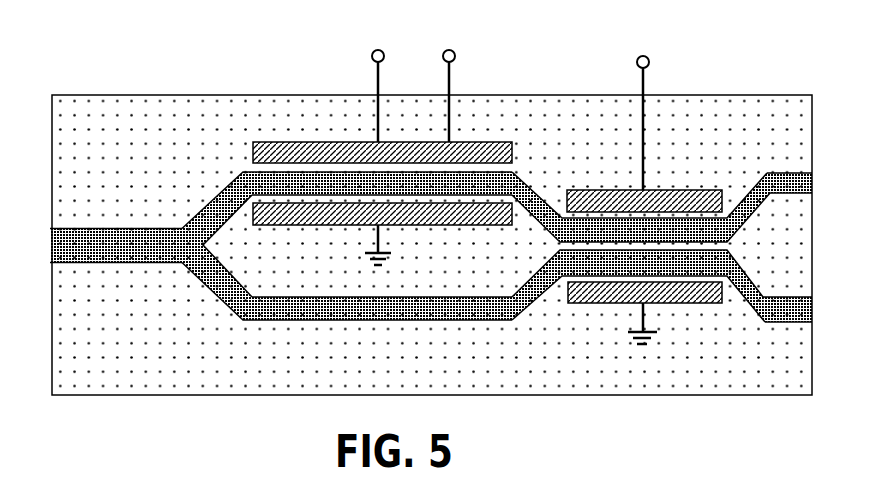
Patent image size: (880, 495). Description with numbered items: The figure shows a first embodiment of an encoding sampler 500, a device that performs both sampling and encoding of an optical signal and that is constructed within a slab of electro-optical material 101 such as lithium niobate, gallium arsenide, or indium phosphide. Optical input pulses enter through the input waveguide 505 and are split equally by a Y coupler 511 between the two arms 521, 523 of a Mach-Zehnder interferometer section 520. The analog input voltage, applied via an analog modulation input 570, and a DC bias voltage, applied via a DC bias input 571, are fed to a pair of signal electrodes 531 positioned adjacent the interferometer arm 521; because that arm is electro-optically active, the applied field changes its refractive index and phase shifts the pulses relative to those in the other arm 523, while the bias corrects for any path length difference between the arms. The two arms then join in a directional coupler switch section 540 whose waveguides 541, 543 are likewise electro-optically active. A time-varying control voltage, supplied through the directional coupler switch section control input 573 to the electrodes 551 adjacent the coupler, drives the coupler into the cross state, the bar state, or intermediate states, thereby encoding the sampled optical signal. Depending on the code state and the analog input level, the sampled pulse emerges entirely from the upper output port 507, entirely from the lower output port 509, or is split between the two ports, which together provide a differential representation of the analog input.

The electro-optical material 101 is at (130, 95).
The encoding sampler 500 is at (217, 62).
The input waveguide 505 is at (48, 248).
The upper output port 507 is at (812, 180).
The lower output port 509 is at (812, 310).
The Y coupler 511 is at (173, 283).
The Mach-Zehnder interferometer section 520 is at (197, 182).
The interferometer arm 521 is at (513, 167).
The interferometer arm 523 is at (387, 322).
The signal electrodes 531 is at (281, 141).
The directional coupler switch section 540 is at (545, 329).
The waveguide 541 is at (716, 217).
The waveguide 543 is at (716, 278).
The electrodes 551 is at (687, 188).
The analog modulation input 570 is at (377, 87).
The DC bias input 571 is at (452, 90).
The directional coupler switch section control input 573 is at (647, 88).